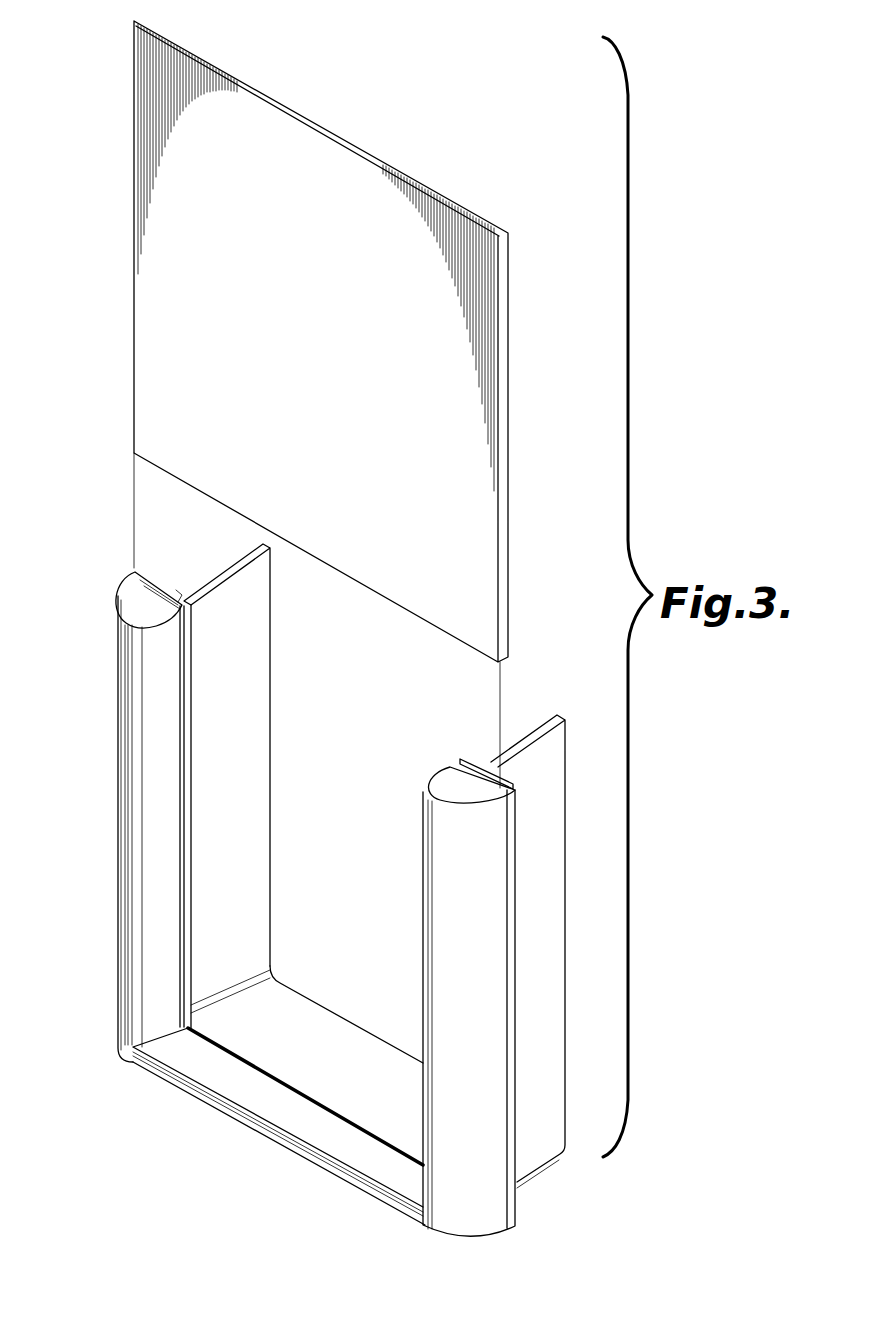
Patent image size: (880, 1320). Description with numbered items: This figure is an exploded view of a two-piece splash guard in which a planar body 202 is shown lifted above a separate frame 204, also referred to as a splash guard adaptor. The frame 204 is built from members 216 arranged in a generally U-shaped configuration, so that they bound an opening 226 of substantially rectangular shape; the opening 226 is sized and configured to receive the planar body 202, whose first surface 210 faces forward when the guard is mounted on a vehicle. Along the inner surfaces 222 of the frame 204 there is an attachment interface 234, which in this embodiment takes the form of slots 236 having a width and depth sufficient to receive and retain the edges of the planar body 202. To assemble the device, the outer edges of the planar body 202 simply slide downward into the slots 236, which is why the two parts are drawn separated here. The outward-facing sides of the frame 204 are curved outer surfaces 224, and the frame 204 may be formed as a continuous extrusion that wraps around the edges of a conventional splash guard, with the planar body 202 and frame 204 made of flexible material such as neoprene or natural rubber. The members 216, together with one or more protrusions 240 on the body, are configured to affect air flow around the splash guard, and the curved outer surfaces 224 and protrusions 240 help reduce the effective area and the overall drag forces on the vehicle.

The planar body 202 is at (132, 215).
The frame 204 is at (117, 622).
The first surface 210 is at (336, 356).
The members 216 is at (135, 599).
The inner surfaces 222 is at (160, 680).
The curved outer surfaces 224 is at (473, 1193).
The opening 226 is at (222, 888).
The attachment interface 234 is at (192, 692).
The slots 236 is at (177, 593).
The protrusions 240 is at (216, 570).